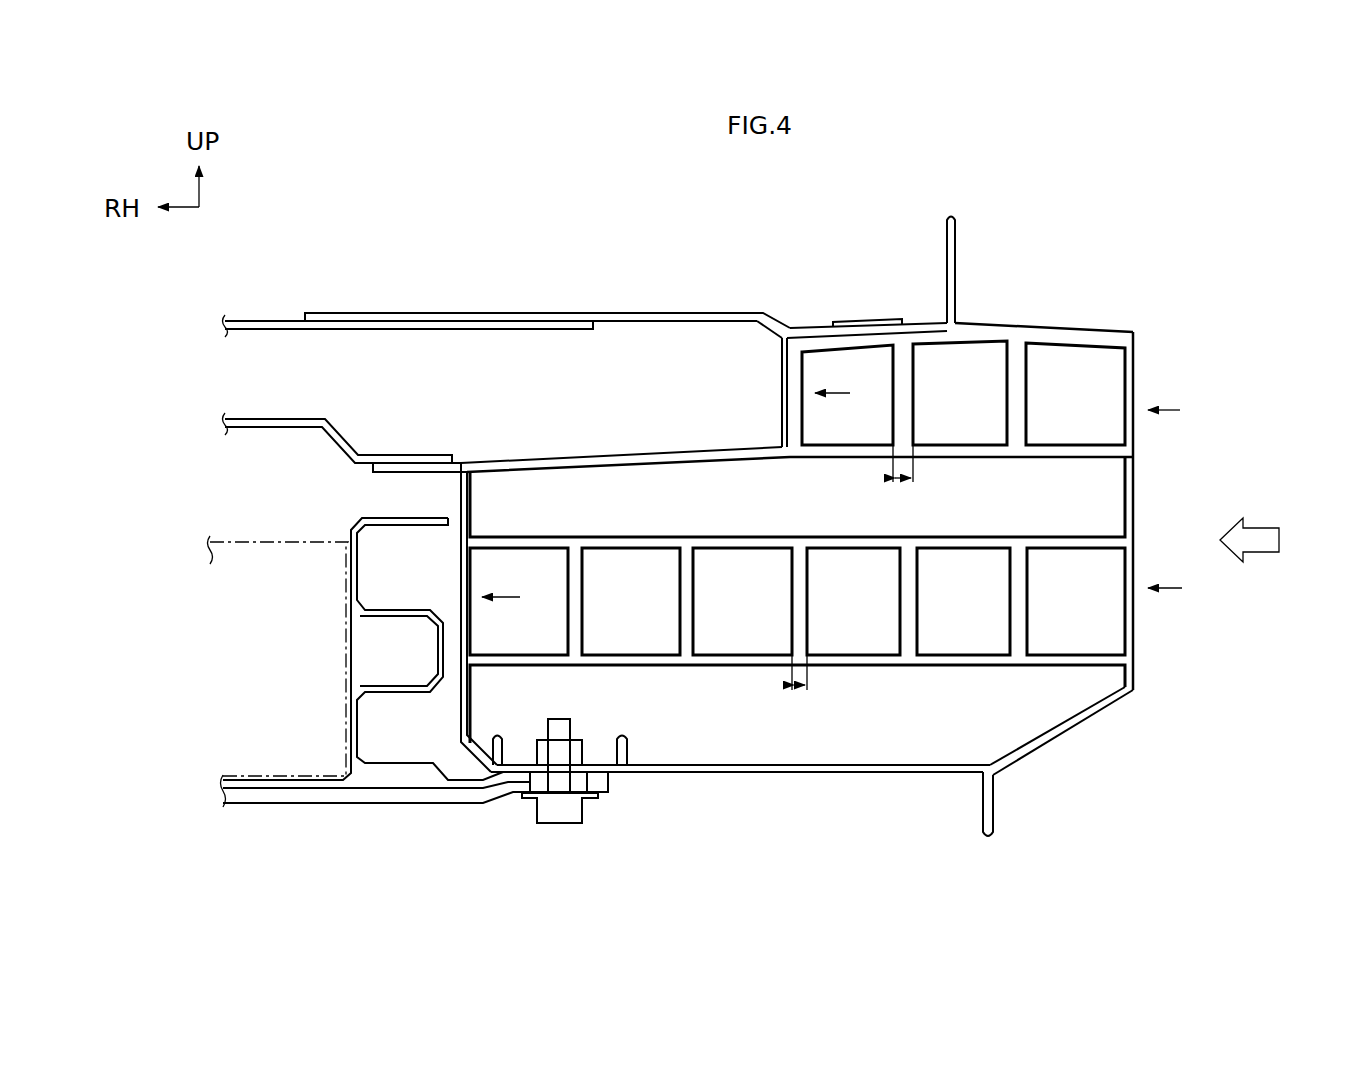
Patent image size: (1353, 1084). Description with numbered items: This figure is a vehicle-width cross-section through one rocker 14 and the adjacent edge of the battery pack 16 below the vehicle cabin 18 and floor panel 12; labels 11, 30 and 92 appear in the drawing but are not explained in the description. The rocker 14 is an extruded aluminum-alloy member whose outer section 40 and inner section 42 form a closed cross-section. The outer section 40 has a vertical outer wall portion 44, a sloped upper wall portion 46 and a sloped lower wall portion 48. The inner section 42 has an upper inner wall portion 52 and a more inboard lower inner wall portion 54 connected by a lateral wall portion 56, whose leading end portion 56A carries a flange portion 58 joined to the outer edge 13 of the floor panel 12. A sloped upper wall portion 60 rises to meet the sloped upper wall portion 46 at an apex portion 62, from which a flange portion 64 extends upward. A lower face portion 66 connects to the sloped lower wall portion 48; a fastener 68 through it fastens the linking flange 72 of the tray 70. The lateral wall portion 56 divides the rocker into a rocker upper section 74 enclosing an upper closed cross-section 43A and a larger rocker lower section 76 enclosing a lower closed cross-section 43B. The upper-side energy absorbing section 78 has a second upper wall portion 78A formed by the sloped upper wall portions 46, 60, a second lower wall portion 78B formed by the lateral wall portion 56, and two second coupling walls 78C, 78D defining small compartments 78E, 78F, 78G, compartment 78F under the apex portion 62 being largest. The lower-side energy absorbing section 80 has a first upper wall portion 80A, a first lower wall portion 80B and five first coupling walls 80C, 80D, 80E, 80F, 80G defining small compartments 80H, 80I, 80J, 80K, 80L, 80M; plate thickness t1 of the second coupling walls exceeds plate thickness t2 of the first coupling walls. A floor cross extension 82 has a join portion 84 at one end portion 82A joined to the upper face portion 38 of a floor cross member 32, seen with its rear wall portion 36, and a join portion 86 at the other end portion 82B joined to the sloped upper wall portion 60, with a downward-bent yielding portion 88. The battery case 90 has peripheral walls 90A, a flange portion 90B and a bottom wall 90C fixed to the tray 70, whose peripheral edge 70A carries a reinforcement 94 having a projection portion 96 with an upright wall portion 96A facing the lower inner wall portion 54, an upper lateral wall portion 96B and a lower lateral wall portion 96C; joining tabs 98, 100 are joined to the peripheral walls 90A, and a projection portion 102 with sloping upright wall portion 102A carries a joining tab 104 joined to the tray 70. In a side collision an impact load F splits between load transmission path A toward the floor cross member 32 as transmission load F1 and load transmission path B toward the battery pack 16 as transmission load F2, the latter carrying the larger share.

The vehicle lower structure 11 is at (1185, 268).
The floor panel 12 is at (266, 416).
The outer edge 13 is at (376, 453).
The rocker 14 is at (1148, 353).
The battery pack 16 is at (238, 808).
The vehicle cabin 18 is at (300, 252).
The space 30 is at (715, 372).
The floor cross member 32 is at (246, 316).
The rear wall portion 36 is at (320, 350).
The upper face portion 38 is at (277, 319).
The outer section 40 is at (1140, 481).
The inner section 42 is at (455, 505).
The upper closed cross-section 43A is at (953, 362).
The lower closed cross-section 43B is at (795, 520).
The outer wall portion 44 is at (1137, 512).
The sloped upper wall portion 46 is at (1025, 331).
The sloped lower wall portion 48 is at (1064, 730).
The upper inner wall portion 52 is at (782, 396).
The lower inner wall portion 54 is at (465, 488).
The lateral wall portion 56 is at (598, 453).
The leading end portion 56A is at (417, 462).
The flange portion 58 is at (397, 463).
The sloped upper wall portion 60 is at (866, 337).
The apex portion 62 is at (962, 327).
The flange portion 64 is at (957, 240).
The lower face portion 66 is at (757, 774).
The fastener 68 is at (560, 815).
The tray 70 is at (310, 806).
The peripheral edge 70A is at (425, 793).
The linking flange 72 is at (522, 782).
The rocker upper section 74 is at (1139, 387).
The rocker lower section 76 is at (1140, 614).
The upper-side energy absorbing section 78 is at (1063, 462).
The second upper wall portion 78A is at (1082, 331).
The second lower wall portion 78B is at (1013, 452).
The second coupling wall 78C is at (1018, 367).
The second coupling wall 78D is at (907, 383).
The small compartment 78E is at (1064, 442).
The small compartment 78F is at (946, 442).
The small compartment 78G is at (840, 441).
The lower-side energy absorbing section 80 is at (936, 670).
The first upper wall portion 80A is at (726, 534).
The first lower wall portion 80B is at (736, 668).
The first coupling wall 80C is at (1024, 574).
The first coupling wall 80D is at (913, 574).
The first coupling wall 80E is at (803, 574).
The first coupling wall 80F is at (690, 574).
The first coupling wall 80G is at (578, 574).
The small compartment 80H is at (1063, 646).
The small compartment 80I is at (957, 646).
The small compartment 80J is at (845, 646).
The small compartment 80K is at (731, 646).
The small compartment 80L is at (619, 646).
The small compartment 80M is at (508, 646).
The floor cross extension 82 is at (656, 310).
The one vehicle width direction end portion 82A is at (456, 312).
The other vehicle width direction end portion 82B is at (795, 328).
The join portion 84 is at (521, 312).
The join portion 86 is at (835, 324).
The yielding portion 88 is at (768, 333).
The battery case 90 is at (267, 795).
The peripheral wall 90A is at (348, 645).
The flange portion 90B is at (415, 519).
The bottom wall 90C is at (250, 777).
The battery pack outline 92 is at (223, 542).
The reinforcement 94 is at (452, 674).
The projection portion 96 is at (426, 607).
The upright wall portion 96A is at (440, 640).
The upper lateral wall portion 96B is at (398, 609).
The lower lateral wall portion 96C is at (400, 690).
The joining tab 98 is at (365, 567).
The joining tab 100 is at (365, 728).
The projection portion 102 is at (388, 762).
The upright wall portion 102A is at (438, 783).
The joining tab 104 is at (462, 790).
The load transmission path A is at (1165, 413).
The load transmission path B is at (1174, 586).
The impact load F is at (1257, 550).
The transmission load F1 is at (835, 395).
The transmission load F2 is at (505, 594).
The plate thickness t1 is at (903, 482).
The plate thickness t2 is at (799, 690).